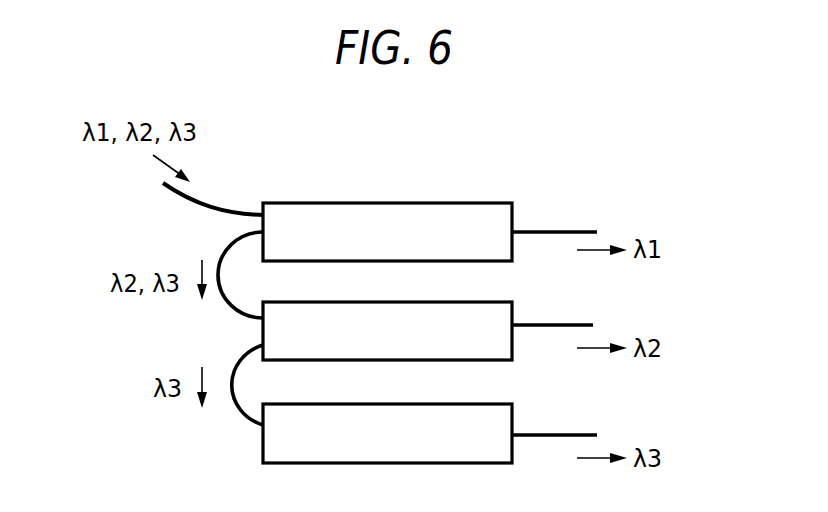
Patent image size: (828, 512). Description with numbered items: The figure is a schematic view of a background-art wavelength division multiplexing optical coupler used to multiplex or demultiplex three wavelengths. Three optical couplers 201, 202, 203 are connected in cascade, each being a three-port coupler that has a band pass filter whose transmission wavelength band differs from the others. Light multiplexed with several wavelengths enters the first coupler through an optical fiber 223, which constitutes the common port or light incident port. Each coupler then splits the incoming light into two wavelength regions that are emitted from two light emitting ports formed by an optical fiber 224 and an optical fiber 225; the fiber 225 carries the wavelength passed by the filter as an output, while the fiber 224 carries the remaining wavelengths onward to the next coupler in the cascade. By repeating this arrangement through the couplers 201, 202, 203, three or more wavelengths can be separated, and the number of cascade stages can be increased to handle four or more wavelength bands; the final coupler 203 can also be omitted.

The optical coupler 201 is at (505, 221).
The optical coupler 202 is at (505, 315).
The optical coupler 203 is at (505, 422).
The optical fiber 223 is at (237, 213).
The optical fiber 224 is at (228, 248).
The optical fiber 225 is at (588, 230).